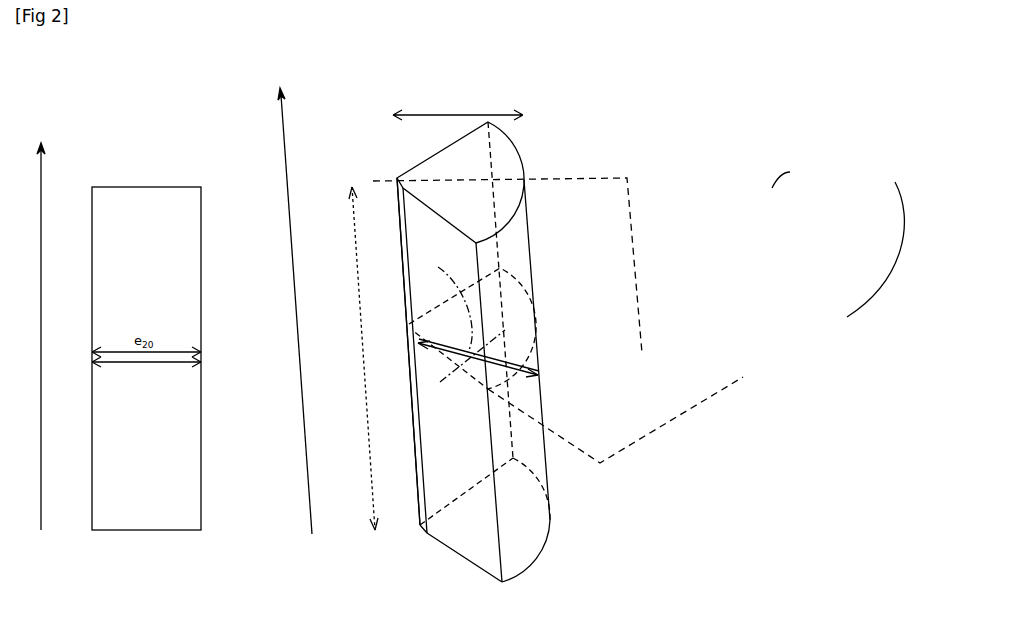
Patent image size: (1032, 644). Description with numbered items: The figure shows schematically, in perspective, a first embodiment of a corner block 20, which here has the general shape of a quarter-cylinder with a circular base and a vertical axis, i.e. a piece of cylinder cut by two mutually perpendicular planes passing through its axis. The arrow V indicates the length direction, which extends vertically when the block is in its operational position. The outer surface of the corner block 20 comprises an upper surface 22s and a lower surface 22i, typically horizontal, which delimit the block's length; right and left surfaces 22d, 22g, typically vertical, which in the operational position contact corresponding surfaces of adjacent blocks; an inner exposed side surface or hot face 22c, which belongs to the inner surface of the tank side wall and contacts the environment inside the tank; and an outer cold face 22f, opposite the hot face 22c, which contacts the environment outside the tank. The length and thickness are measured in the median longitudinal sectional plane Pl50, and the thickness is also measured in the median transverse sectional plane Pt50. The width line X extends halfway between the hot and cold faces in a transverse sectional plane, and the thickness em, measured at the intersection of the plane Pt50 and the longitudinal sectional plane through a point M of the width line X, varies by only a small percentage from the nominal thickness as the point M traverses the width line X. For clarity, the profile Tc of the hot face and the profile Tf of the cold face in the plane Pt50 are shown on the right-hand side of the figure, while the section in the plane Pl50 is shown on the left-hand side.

The corner block 20 is at (557, 125).
The upper surface 22s is at (440, 168).
The right surface 22d is at (420, 232).
The left surface 22g is at (448, 418).
The cold face 22f is at (420, 497).
The lower surface 22i is at (475, 543).
The hot face 22c is at (525, 533).
The point of the width line M is at (468, 345).
The width line X is at (465, 334).
The thickness at point M em is at (500, 352).
The median longitudinal sectional plane Pl50 is at (507, 265).
The median transverse sectional plane Pt50 is at (615, 420).
The profile of the cold face Tf is at (770, 205).
The profile of the hot face Tc is at (865, 305).
The length direction arrow V is at (173, 300).